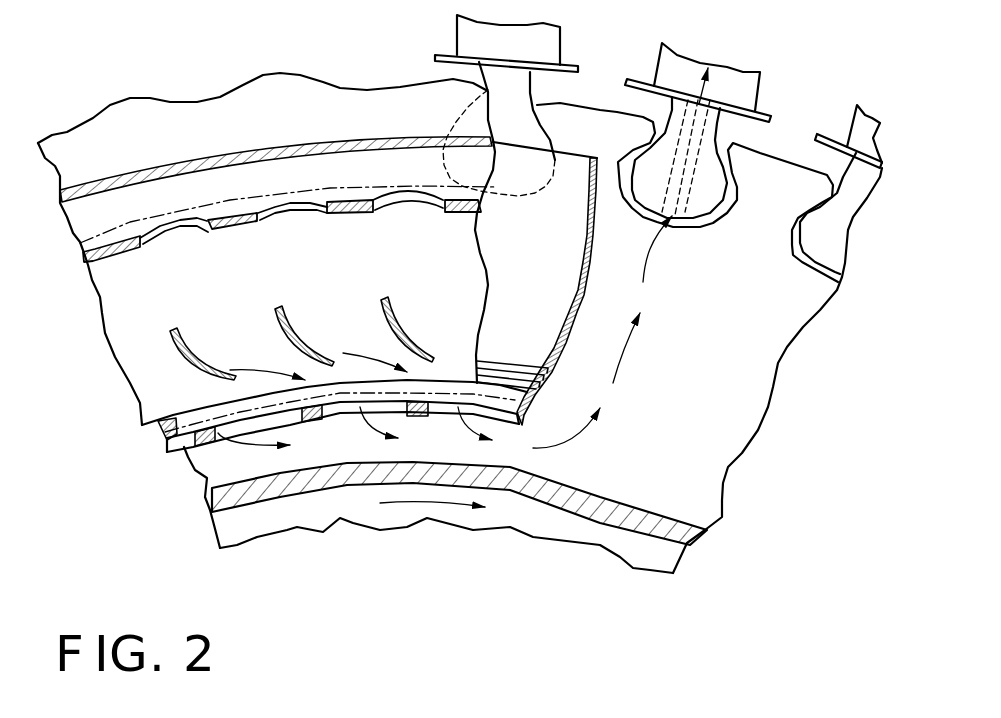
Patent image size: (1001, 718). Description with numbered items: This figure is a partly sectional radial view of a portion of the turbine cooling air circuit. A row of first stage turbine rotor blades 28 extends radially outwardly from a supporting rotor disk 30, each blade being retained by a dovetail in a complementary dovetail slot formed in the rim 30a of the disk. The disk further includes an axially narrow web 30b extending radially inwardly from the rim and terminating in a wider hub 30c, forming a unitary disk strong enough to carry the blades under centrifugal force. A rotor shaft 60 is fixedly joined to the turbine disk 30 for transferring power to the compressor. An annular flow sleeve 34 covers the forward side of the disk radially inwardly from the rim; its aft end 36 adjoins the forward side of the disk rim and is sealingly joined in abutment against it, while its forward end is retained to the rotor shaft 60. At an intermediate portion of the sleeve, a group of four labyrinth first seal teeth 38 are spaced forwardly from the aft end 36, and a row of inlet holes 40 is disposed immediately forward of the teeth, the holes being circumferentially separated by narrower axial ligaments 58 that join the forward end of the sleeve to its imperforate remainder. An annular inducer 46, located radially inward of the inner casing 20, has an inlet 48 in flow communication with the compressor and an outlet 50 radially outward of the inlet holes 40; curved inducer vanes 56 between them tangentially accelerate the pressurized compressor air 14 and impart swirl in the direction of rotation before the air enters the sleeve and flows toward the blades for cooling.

The pressurized air 14 is at (293, 256).
The radially inner casing 20 is at (107, 244).
The first stage turbine rotor blades 28 is at (729, 66).
The rotor disk 30 is at (745, 456).
The rim 30a is at (789, 221).
The web 30b is at (726, 372).
The hub 30c is at (627, 568).
The flow sleeve 34 is at (544, 287).
The aft end 36 is at (571, 153).
The first seal teeth 38 is at (500, 360).
The inlet holes 40 is at (219, 436).
The inducer 46 is at (101, 320).
The inlet 48 is at (414, 210).
The outlet 50 is at (163, 440).
The inducer vanes 56 is at (383, 300).
The axial ligaments 58 is at (413, 420).
The rotor shaft 60 is at (623, 493).